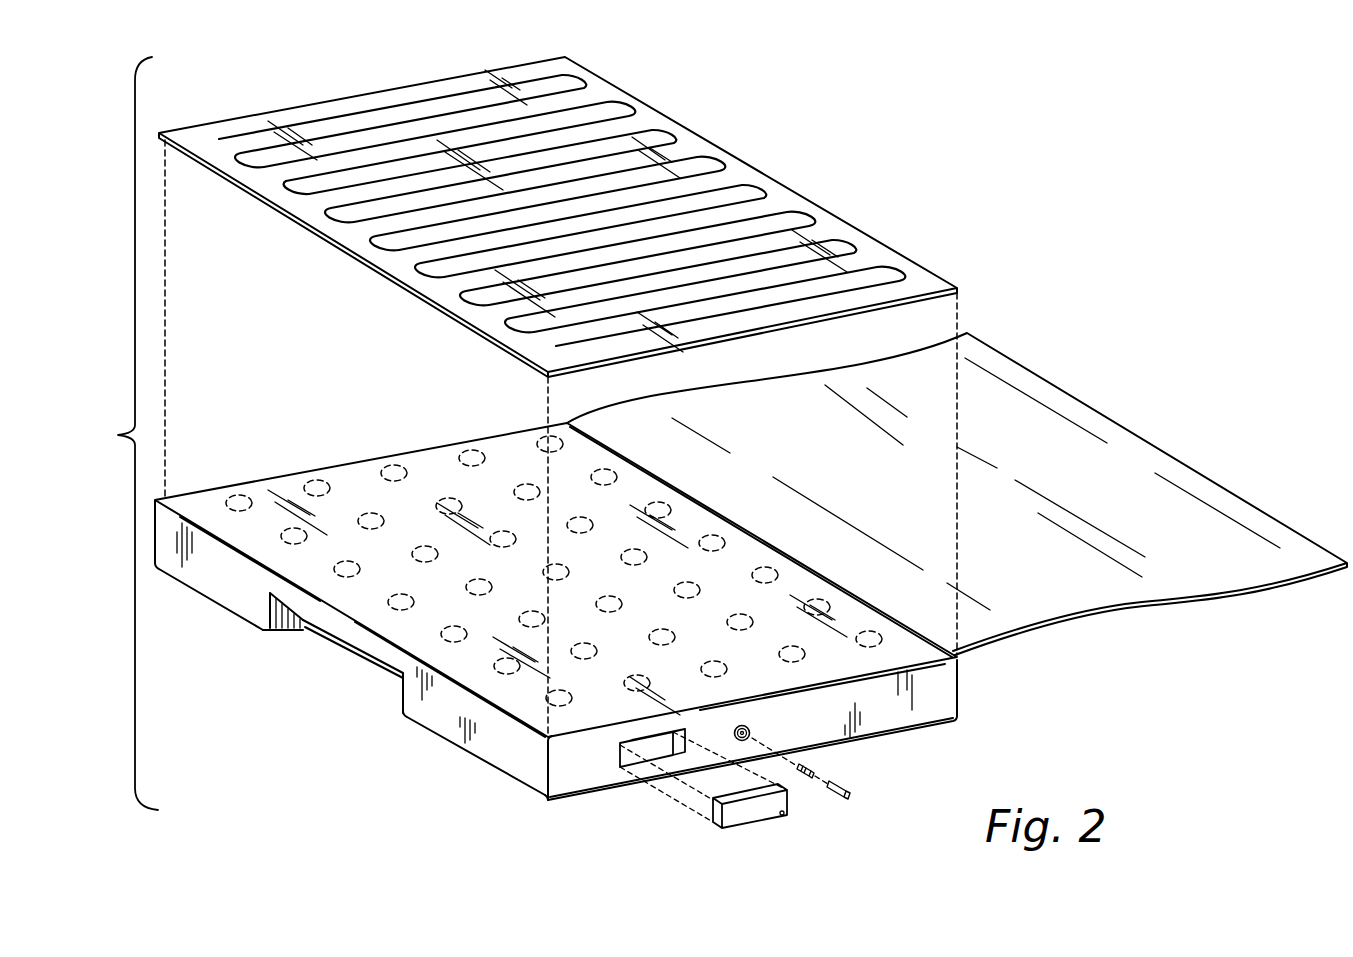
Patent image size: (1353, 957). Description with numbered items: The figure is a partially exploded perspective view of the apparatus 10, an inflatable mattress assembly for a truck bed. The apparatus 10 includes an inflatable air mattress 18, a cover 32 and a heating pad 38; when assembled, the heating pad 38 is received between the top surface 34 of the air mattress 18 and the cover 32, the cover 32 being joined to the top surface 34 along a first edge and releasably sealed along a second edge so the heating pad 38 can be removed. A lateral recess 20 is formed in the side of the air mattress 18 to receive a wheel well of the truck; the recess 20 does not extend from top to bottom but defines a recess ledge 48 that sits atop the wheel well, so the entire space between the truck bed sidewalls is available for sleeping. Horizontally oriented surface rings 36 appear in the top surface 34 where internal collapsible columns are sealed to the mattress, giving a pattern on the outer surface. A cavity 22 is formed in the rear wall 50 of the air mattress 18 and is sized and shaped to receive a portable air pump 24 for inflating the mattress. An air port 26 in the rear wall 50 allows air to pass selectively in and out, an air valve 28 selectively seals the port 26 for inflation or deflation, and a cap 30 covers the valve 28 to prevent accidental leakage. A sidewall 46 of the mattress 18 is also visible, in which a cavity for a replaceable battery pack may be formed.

The apparatus 10 is at (120, 433).
The inflatable air mattress 18 is at (945, 700).
The lateral recess 20 is at (297, 633).
The cavity 22 is at (650, 748).
The portable air pump 24 is at (743, 818).
The air port 26 is at (754, 731).
The air valve 28 is at (816, 771).
The cap 30 is at (842, 794).
The cover 32 is at (1137, 452).
The top surface 34 is at (213, 508).
The surface rings 36 is at (460, 457).
The heating pad 38 is at (750, 168).
The sidewall 46 is at (513, 752).
The recess ledge 48 is at (358, 625).
The rear wall 50 is at (575, 770).